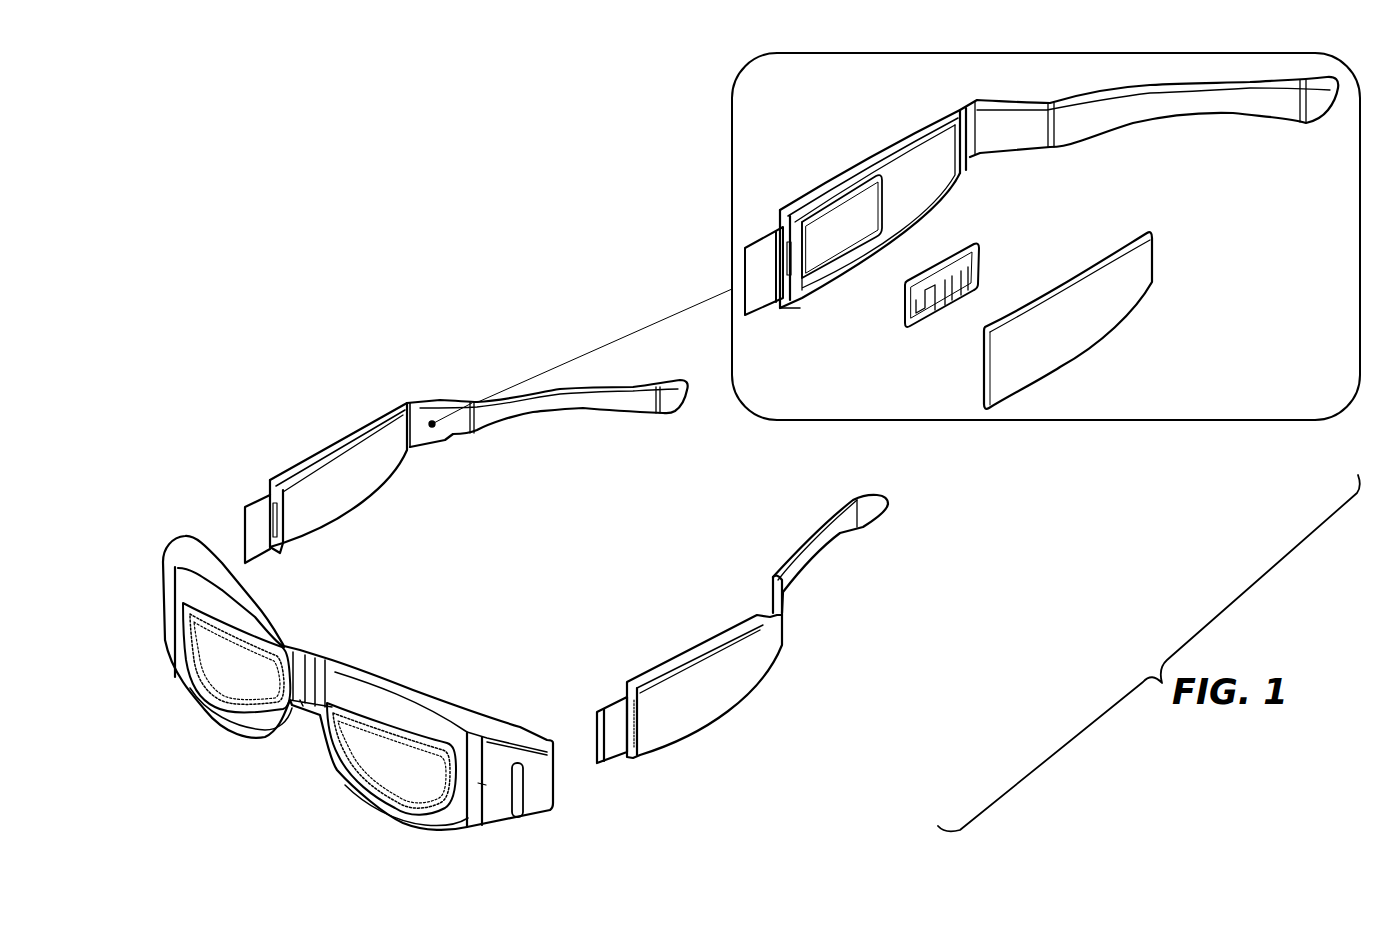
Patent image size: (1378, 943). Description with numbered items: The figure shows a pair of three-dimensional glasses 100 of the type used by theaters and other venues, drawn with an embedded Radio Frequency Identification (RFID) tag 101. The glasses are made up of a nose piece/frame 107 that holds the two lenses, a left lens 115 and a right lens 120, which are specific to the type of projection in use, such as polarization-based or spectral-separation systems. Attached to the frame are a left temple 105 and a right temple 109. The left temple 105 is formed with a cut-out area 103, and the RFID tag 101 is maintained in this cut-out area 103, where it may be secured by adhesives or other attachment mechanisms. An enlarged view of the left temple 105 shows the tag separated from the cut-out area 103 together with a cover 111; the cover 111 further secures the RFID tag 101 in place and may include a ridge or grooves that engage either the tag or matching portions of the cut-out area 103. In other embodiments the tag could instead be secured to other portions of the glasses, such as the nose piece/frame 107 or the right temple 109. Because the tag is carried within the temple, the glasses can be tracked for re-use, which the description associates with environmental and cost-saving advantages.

The 3D glasses 100 is at (1061, 590).
The Radio Frequency Identification (RFID) tag 101 is at (970, 225).
The cut-out area 103 is at (840, 205).
The left temple 105 is at (1047, 90).
The nose piece/frame 107 is at (184, 540).
The right temple 109 is at (698, 705).
The cover 111 is at (1086, 326).
The left lens 115 is at (370, 765).
The right lens 120 is at (222, 675).